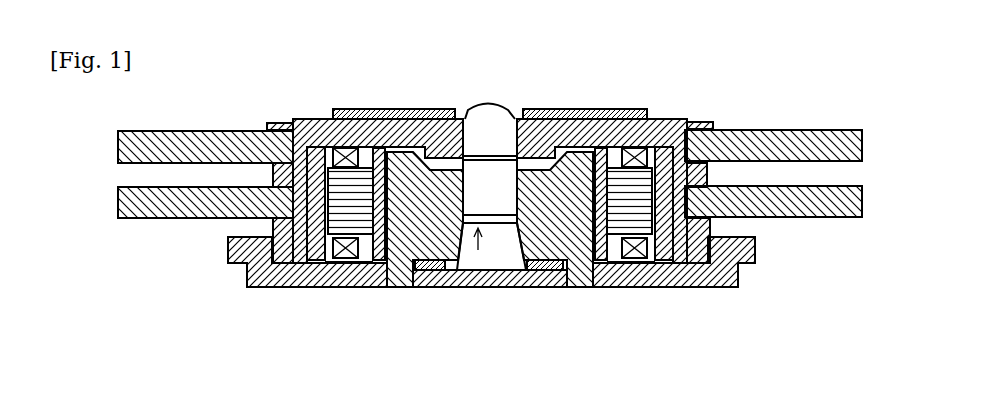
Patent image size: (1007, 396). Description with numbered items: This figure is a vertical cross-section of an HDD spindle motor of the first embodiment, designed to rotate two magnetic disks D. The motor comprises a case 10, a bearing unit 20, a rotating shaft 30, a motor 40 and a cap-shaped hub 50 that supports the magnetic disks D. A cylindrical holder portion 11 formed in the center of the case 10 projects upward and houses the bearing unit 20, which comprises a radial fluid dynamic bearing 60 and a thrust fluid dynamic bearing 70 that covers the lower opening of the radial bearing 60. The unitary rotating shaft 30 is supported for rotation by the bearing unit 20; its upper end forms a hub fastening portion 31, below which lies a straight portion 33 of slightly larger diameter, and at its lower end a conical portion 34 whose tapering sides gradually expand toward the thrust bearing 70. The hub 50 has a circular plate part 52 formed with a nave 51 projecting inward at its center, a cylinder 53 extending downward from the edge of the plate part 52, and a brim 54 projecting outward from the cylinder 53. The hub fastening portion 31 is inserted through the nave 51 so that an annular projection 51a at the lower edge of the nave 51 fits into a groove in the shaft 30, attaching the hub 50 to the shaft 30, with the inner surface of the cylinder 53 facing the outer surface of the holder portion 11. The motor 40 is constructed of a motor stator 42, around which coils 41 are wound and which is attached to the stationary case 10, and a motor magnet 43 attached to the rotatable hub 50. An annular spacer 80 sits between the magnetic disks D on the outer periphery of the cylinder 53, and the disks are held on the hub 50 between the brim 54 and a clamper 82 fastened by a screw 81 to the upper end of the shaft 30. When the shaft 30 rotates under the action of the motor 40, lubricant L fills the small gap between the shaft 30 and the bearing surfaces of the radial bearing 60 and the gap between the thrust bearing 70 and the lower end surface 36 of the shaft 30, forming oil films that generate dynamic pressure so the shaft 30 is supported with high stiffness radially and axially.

The case 10 is at (740, 287).
The cylindrical holder portion 11 is at (625, 147).
The bearing unit 20 is at (402, 292).
The rotating shaft 30 is at (466, 268).
The hub fastening portion 31 is at (526, 118).
The straight portion 33 is at (410, 146).
The conical portion 34 is at (488, 258).
The lower end surface 36 is at (511, 270).
The motor 40 is at (334, 289).
The coils 41 is at (655, 118).
The motor stator 42 is at (640, 284).
The motor magnet 43 is at (688, 284).
The hub 50 is at (313, 118).
The nave 51 is at (397, 143).
The annular projection 51a is at (492, 112).
The circular plate part 52 is at (368, 108).
The cylinder 53 is at (250, 132).
The brim 54 is at (272, 224).
The radial fluid dynamic bearing 60 is at (578, 250).
The thrust fluid dynamic bearing 70 is at (455, 284).
The annular spacer 80 is at (724, 130).
The screw 81 is at (493, 156).
The clamper 82 is at (562, 108).
The magnetic disks D is at (802, 129).
The lubricant L is at (542, 270).